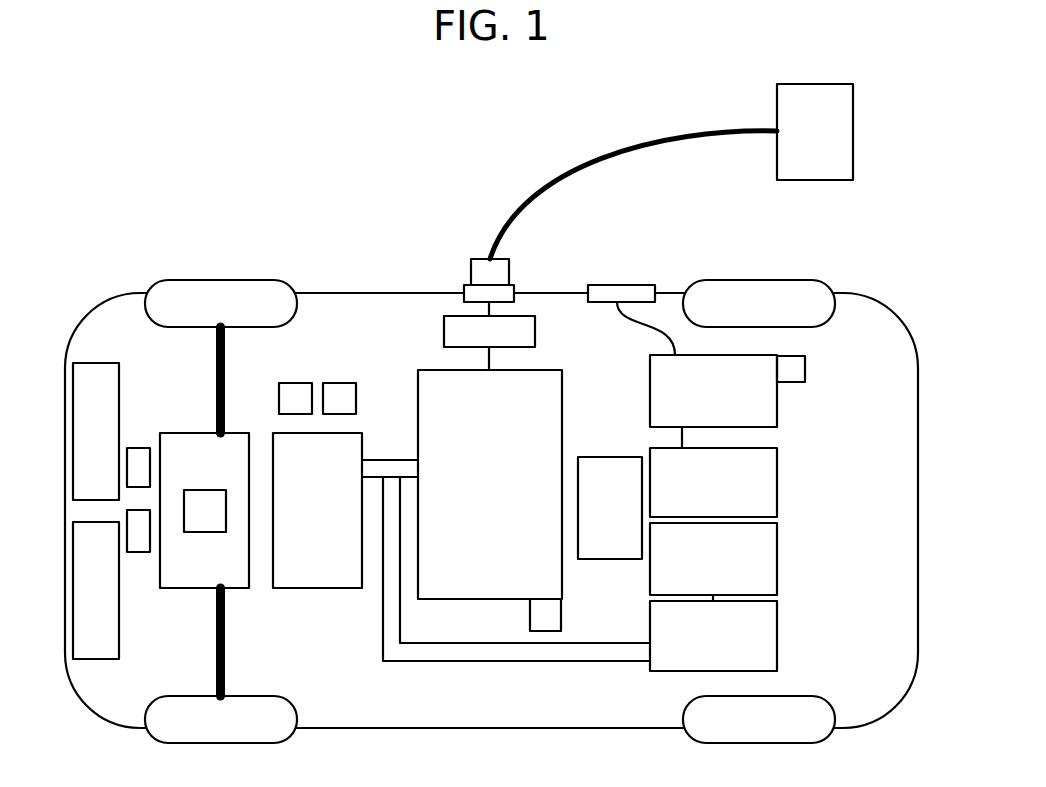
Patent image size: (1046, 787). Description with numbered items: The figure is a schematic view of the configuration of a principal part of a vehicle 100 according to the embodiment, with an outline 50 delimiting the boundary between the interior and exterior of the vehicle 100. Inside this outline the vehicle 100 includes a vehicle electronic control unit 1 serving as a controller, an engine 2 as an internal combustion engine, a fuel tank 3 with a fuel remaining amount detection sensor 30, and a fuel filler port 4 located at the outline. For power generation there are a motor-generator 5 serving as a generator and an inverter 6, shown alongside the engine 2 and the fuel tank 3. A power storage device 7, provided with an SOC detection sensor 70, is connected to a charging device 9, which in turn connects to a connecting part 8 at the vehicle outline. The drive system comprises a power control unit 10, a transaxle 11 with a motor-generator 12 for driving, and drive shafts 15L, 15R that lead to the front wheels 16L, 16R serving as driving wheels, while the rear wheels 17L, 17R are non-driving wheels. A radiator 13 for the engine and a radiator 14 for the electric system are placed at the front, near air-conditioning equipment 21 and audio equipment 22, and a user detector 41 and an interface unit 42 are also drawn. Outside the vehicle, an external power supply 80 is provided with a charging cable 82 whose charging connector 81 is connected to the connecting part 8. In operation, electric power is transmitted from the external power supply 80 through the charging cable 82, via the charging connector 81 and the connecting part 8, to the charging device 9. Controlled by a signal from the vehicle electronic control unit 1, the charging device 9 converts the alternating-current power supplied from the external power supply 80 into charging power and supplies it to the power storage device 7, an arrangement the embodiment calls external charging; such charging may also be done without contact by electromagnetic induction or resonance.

The vehicle 100 is at (186, 156).
The outline of the vehicle 50 is at (919, 368).
The front wheel 16R is at (229, 280).
The front wheel 16L is at (225, 743).
The rear wheel 17R is at (785, 280).
The rear wheel 17L is at (783, 743).
The drive shaft 15R is at (226, 386).
The drive shaft 15L is at (226, 664).
The radiator for electric system 14 is at (95, 363).
The radiator for engine 13 is at (95, 659).
The air-conditioning equipment 21 is at (138, 448).
The audio equipment 22 is at (138, 552).
The transaxle 11 is at (175, 433).
The motor-generator for driving 12 is at (205, 532).
The power control unit 10 is at (344, 588).
The interface unit 42 is at (303, 383).
The user detector 41 is at (342, 383).
The power storage device 7 is at (418, 410).
The SOC detection sensor 70 is at (562, 612).
The charging device 9 is at (444, 332).
The connecting part 8 is at (474, 275).
The charging connector 81 is at (487, 257).
The charging cable 82 is at (648, 140).
The external power supply 80 is at (821, 84).
The fuel filler port 4 is at (617, 285).
The vehicle electronic control unit 1 is at (610, 457).
The fuel tank 3 is at (777, 405).
The fuel remaining amount detection sensor 30 is at (805, 366).
The engine 2 is at (777, 477).
The motor-generator for power generation 5 is at (777, 559).
The inverter for power generation 6 is at (777, 634).